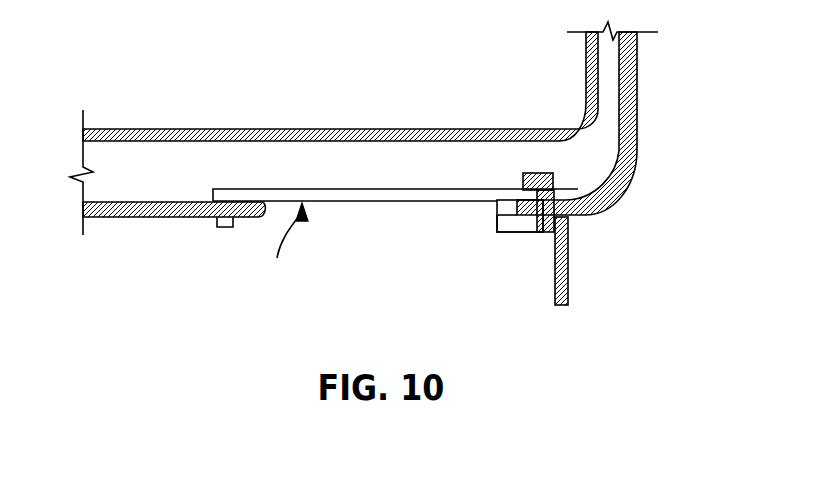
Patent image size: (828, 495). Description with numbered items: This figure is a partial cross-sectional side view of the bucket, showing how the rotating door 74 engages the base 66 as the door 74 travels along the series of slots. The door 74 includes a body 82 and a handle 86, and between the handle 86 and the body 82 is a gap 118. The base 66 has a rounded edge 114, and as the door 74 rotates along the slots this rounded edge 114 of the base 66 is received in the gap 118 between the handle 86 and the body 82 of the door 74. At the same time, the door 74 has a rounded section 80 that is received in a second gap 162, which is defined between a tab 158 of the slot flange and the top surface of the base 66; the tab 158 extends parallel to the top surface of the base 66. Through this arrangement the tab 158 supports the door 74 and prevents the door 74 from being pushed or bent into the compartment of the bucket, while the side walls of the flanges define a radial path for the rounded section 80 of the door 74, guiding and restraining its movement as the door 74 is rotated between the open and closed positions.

The base 66 is at (568, 238).
The door 74 is at (284, 249).
The rounded section 80 is at (557, 187).
The body 82 is at (397, 188).
The handle 86 is at (497, 224).
The rounded edge 114 is at (513, 230).
The gap 118 is at (520, 200).
The tab 158 is at (538, 173).
The gap 162 is at (528, 230).